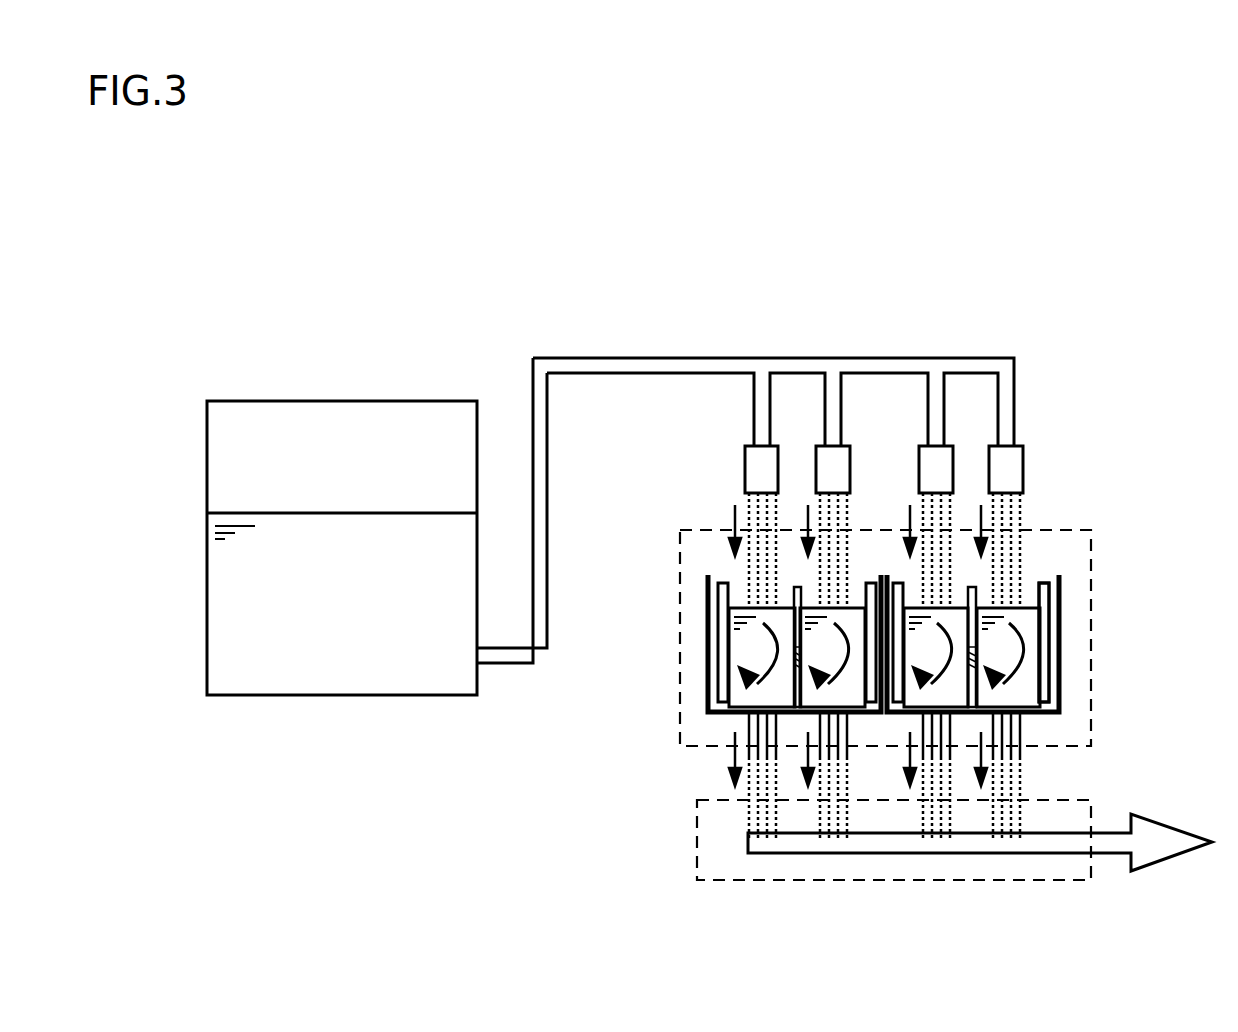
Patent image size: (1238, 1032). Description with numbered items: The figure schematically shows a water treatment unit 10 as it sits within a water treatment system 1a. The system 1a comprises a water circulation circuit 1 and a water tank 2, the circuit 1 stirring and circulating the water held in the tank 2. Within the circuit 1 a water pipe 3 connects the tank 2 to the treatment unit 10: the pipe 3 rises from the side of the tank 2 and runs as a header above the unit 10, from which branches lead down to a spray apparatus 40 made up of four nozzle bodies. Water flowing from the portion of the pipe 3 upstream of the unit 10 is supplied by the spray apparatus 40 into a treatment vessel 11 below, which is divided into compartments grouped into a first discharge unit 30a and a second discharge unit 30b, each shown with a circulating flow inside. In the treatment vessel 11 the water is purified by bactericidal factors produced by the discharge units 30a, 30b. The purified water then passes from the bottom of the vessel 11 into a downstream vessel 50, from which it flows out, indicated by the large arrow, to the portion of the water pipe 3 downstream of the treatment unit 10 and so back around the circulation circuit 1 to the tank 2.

The water circulation circuit 1 is at (695, 352).
The water treatment system 1a is at (522, 238).
The water tank 2 is at (335, 399).
The water pipe 3 is at (594, 358).
The water treatment unit 10 is at (1027, 270).
The treatment vessel 11 is at (1066, 645).
The first discharge unit 30a is at (716, 556).
The second discharge unit 30b is at (1060, 555).
The spray apparatus 40 is at (745, 470).
The downstream vessel 50 is at (686, 840).